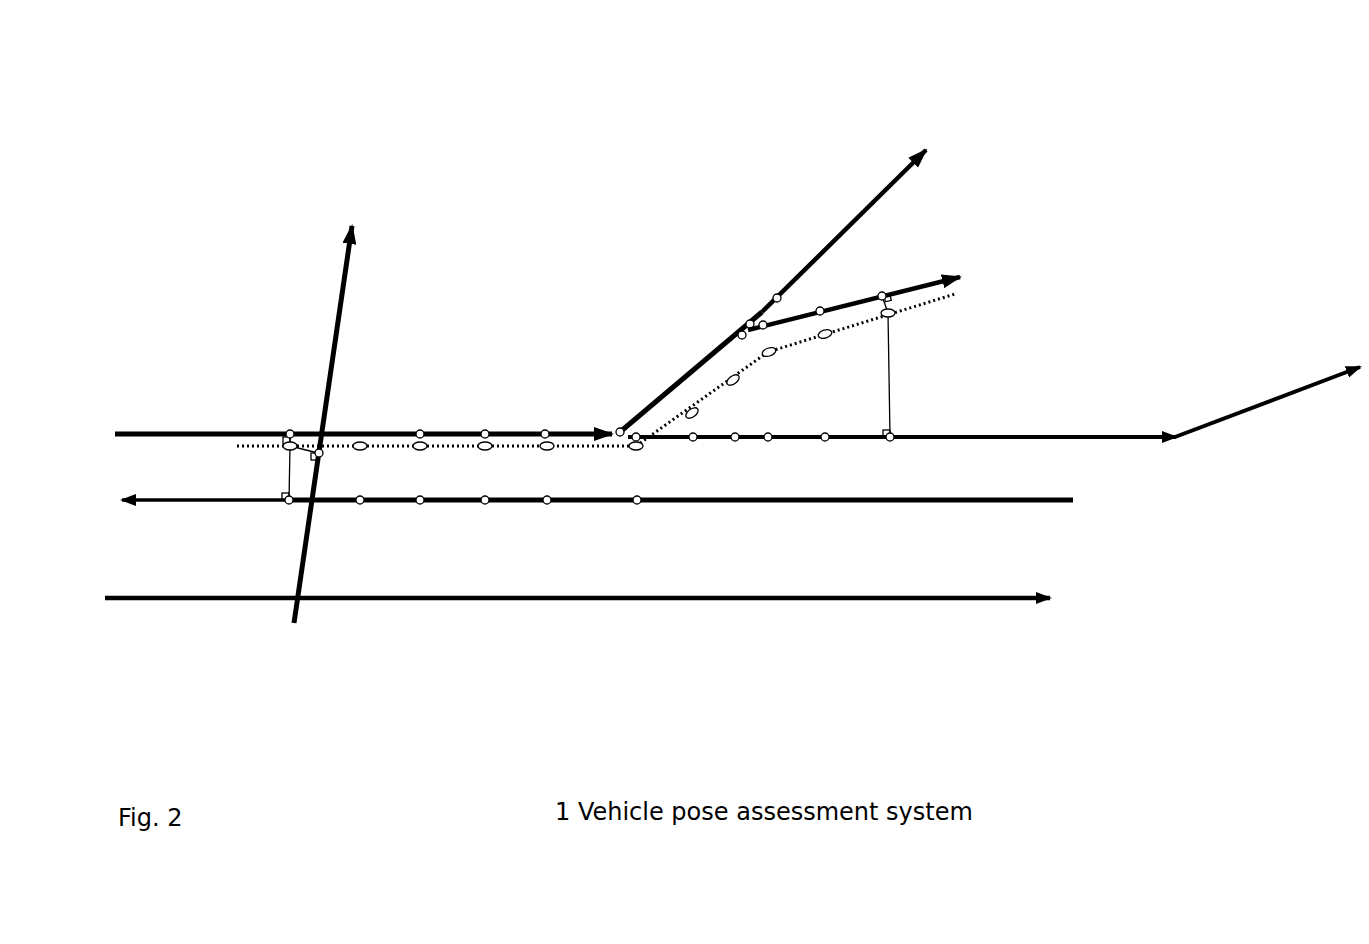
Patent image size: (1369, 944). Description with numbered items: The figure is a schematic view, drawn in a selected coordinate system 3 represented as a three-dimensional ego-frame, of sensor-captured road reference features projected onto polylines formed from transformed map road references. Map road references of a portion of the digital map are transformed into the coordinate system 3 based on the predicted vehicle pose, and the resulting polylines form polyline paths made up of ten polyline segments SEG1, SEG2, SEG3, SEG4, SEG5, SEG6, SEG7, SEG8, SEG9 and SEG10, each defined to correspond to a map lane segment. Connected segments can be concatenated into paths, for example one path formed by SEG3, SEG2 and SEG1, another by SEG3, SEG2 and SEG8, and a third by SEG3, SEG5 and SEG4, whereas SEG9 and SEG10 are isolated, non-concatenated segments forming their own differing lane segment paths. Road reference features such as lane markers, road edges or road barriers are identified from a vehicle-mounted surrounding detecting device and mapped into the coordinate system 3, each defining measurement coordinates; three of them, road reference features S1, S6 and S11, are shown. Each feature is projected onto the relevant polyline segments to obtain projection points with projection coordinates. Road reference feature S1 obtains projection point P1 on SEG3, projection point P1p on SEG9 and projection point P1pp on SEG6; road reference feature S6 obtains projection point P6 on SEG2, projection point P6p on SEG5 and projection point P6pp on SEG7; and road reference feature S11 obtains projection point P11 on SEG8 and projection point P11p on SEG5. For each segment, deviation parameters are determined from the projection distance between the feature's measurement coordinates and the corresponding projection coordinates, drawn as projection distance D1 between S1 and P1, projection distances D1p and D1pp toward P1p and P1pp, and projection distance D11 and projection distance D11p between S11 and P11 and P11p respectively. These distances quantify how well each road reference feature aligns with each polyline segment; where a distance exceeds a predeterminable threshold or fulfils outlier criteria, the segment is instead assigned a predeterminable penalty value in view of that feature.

The selected coordinate system 3 is at (226, 96).
The polyline segment SEG1 is at (825, 220).
The polyline segment SEG2 is at (671, 346).
The polyline segment SEG3 is at (472, 405).
The polyline segment SEG4 is at (1284, 420).
The polyline segment SEG5 is at (946, 452).
The polyline segment SEG6 is at (185, 515).
The polyline segment SEG7 is at (724, 514).
The polyline segment SEG8 is at (840, 283).
The polyline segment SEG9 is at (316, 328).
The polyline segment SEG10 is at (510, 621).
The projection point P1 is at (285, 425).
The projection point P1p is at (329, 448).
The projection point P1pp is at (284, 512).
The projection distance D1 is at (298, 437).
The projection distance D1p is at (302, 462).
The projection distance D1pp is at (314, 500).
The road reference feature S1 is at (281, 458).
The projection point P6 is at (617, 423).
The projection point P6p is at (640, 426).
The projection point P6pp is at (636, 513).
The road reference feature S6 is at (635, 456).
The projection point P11 is at (878, 284).
The projection point P11p is at (888, 449).
The projection distance D11 is at (894, 301).
The projection distance D11p is at (902, 391).
The road reference feature S11 is at (904, 328).